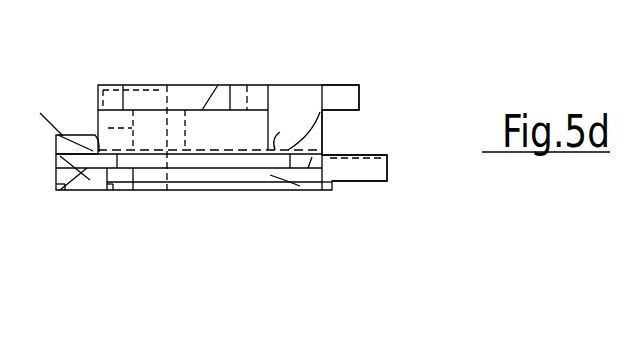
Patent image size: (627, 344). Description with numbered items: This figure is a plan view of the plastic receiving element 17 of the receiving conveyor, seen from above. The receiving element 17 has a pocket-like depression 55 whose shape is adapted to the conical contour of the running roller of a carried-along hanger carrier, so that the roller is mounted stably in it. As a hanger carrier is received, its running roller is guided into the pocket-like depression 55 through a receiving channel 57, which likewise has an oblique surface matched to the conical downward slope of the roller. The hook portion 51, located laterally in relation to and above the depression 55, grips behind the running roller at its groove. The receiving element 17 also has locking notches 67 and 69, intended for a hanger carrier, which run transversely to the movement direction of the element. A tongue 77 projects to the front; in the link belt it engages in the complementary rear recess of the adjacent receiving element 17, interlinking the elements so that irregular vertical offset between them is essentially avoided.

The receiving element 17 is at (377, 98).
The hook portion 51 is at (200, 92).
The pocket-like depression 55 is at (212, 157).
The receiving channel 57 is at (312, 157).
The locking notch 67 is at (270, 160).
The locking notch 69 is at (97, 140).
The tongue 77 is at (367, 173).